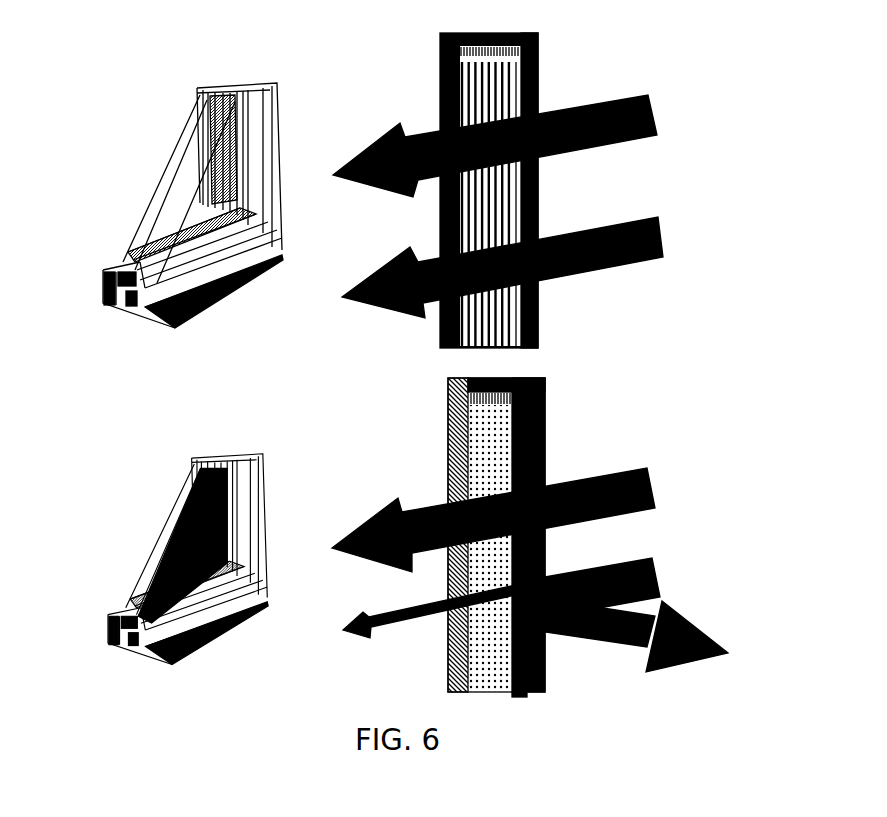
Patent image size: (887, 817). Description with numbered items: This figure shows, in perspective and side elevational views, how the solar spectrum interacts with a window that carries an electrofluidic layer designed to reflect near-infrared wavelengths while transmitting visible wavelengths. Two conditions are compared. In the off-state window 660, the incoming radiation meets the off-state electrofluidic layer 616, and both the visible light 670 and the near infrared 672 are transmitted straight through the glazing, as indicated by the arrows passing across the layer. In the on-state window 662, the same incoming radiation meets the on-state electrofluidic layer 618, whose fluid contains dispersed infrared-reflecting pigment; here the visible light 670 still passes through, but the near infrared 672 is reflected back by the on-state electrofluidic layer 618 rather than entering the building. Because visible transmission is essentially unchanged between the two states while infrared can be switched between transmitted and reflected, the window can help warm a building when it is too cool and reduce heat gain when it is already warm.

The off-state window 660 is at (427, 88).
The on-state window 662 is at (432, 457).
The off-state electrofluidic layer 616 is at (538, 102).
The on-state electrofluidic layer 618 is at (547, 468).
The visible light 670 is at (657, 115).
The near infrared 672 is at (660, 230).